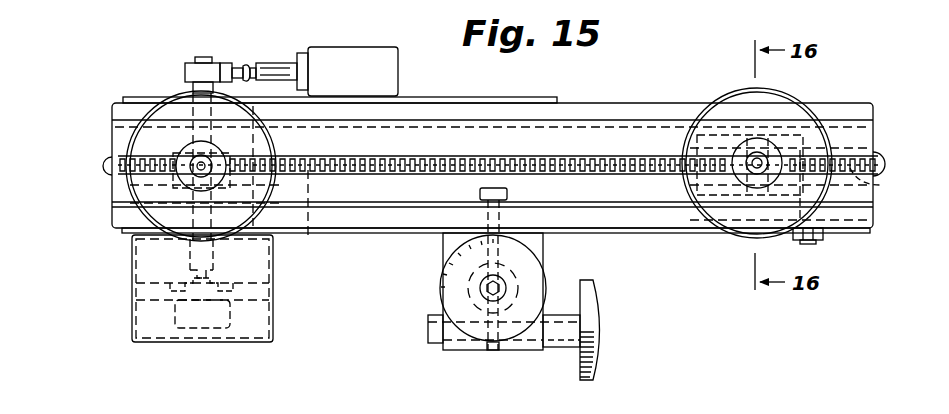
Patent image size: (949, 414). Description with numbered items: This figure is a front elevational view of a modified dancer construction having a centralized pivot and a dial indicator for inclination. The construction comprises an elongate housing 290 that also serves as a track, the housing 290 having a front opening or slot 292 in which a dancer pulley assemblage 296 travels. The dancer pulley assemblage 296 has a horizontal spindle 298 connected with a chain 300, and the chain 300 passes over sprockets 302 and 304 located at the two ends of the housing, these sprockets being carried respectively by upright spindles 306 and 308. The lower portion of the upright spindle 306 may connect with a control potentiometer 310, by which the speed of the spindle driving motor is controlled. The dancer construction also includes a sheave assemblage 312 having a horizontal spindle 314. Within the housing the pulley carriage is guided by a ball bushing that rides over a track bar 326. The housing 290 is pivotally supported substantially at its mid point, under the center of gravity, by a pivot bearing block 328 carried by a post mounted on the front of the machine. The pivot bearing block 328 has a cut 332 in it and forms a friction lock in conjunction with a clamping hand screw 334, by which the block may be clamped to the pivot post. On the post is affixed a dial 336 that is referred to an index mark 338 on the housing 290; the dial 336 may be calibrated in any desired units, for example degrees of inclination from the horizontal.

The housing 290 is at (625, 238).
The front opening or slot 292 is at (586, 134).
The dancer pulley assemblage 296 is at (720, 100).
The horizontal spindle 298 is at (778, 158).
The chain 300 is at (310, 238).
The sprocket 302 is at (182, 174).
The sprocket 304 is at (853, 176).
The upright spindle 306 is at (113, 119).
The upright spindle 308 is at (852, 232).
The control potentiometer 310 is at (203, 330).
The sheave assemblage 312 is at (163, 88).
The horizontal spindle 314 is at (190, 176).
The track bar 326 is at (505, 153).
The pivot bearing block 328 is at (447, 246).
The cut 332 is at (492, 350).
The clamping hand screw 334 is at (562, 349).
The dial 336 is at (527, 264).
The index mark 338 is at (495, 225).